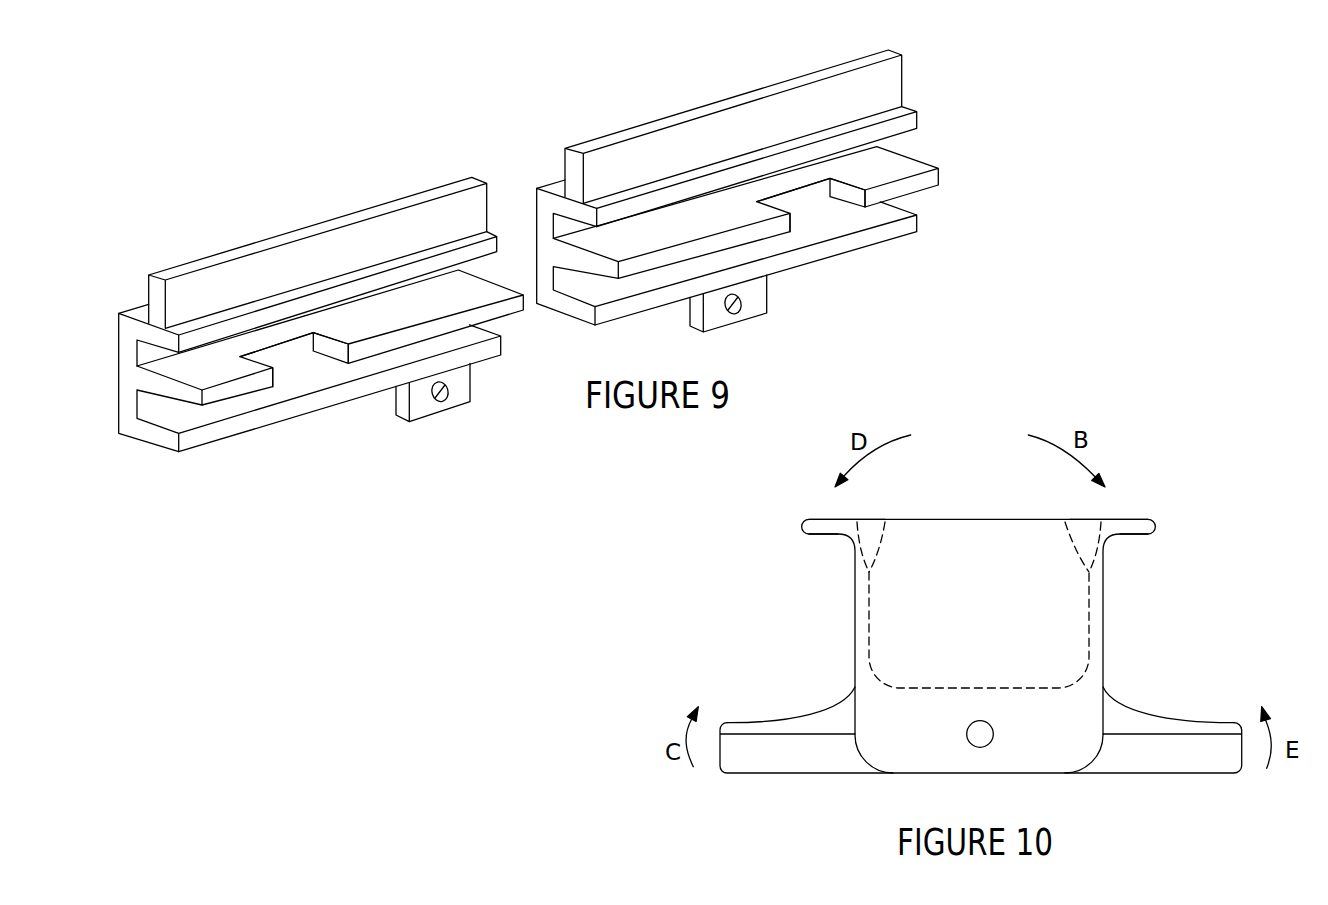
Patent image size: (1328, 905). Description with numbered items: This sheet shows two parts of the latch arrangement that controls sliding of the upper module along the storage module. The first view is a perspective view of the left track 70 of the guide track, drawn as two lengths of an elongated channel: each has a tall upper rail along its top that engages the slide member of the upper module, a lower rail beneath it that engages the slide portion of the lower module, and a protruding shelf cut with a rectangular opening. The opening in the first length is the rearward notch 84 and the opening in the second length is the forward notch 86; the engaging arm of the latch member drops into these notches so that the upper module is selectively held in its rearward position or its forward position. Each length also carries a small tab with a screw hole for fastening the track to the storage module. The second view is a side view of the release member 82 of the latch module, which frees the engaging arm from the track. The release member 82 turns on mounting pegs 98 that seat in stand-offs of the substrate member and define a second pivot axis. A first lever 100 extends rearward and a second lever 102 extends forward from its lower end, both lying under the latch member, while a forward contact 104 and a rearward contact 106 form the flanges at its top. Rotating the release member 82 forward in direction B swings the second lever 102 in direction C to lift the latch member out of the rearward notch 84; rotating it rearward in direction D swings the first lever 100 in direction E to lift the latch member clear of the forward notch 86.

In FIG. 9, the left track 70 is at (342, 163).
In FIG. 9, the rearward notch 84 is at (282, 352).
In FIG. 9, the forward notch 86 is at (808, 198).
In FIG. 10, the release member 82 is at (1103, 635).
In FIG. 10, the mounting pegs 98 is at (985, 742).
In FIG. 10, the first lever 100 is at (1197, 758).
In FIG. 10, the second lever 102 is at (782, 758).
In FIG. 10, the forward contact 104 is at (1067, 519).
In FIG. 10, the rearward contact 106 is at (880, 519).